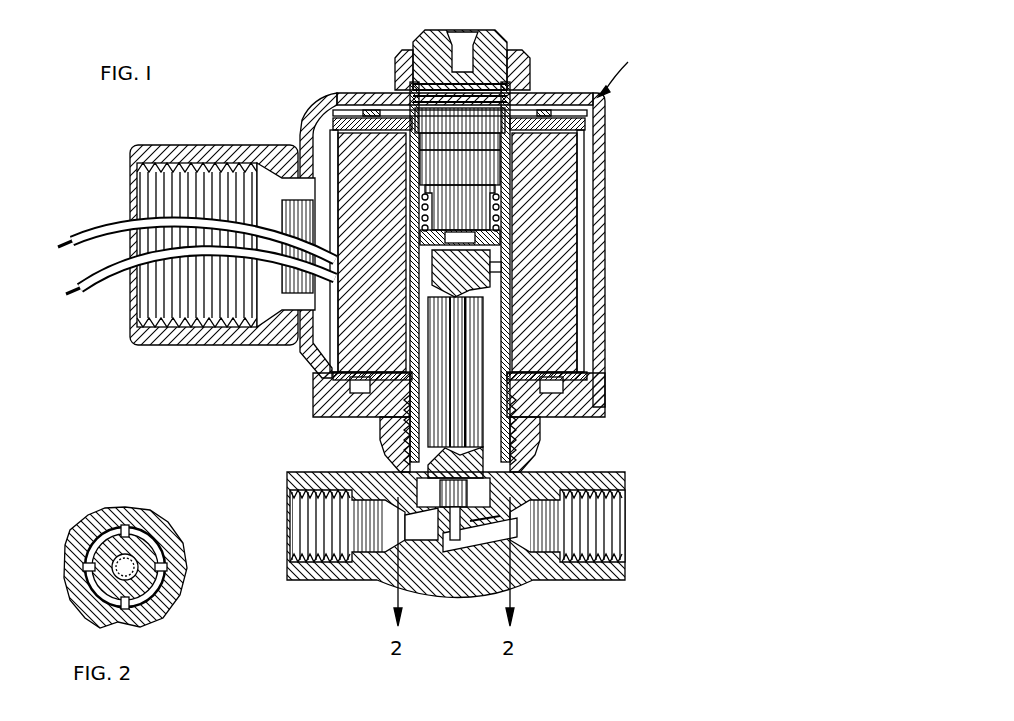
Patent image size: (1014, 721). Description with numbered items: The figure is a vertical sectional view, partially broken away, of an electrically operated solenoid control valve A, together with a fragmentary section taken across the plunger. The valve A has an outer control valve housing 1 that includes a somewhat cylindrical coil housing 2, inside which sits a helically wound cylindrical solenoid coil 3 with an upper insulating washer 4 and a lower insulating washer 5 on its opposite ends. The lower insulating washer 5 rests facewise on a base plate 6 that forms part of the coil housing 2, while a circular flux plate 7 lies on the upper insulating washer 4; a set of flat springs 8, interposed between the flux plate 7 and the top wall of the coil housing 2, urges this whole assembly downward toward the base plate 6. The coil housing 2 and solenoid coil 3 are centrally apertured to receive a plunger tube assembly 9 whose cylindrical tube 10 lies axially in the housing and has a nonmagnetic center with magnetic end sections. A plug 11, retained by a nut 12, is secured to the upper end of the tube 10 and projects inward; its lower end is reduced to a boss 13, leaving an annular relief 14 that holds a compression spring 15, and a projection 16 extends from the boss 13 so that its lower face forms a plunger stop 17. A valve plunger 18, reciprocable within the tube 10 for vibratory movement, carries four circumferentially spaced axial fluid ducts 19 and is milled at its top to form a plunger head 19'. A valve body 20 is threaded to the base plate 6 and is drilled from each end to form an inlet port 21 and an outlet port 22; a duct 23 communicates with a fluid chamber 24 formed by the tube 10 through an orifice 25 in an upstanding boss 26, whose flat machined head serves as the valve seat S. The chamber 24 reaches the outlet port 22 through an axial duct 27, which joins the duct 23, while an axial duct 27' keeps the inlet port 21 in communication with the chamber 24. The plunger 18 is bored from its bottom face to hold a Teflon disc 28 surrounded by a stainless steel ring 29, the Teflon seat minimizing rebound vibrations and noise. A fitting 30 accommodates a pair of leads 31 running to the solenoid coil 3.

In FIG. 1, the electrically operated solenoid control valve A is at (616, 72).
In FIG. 1, the outer control valve housing 1 is at (318, 100).
In FIG. 1, the coil housing 2 is at (600, 360).
In FIG. 1, the solenoid coil 3 is at (570, 165).
In FIG. 1, the upper insulating washer 4 is at (330, 140).
In FIG. 1, the lower insulating washer 5 is at (305, 360).
In FIG. 1, the base plate 6 is at (598, 412).
In FIG. 1, the flux plate 7 is at (330, 95).
In FIG. 1, the flat springs 8 is at (560, 94).
In FIG. 1, the plunger tube assembly 9 is at (426, 36).
In FIG. 1, the cylindrical tube 10 is at (505, 318).
In FIG. 1, the plug 11 is at (470, 36).
In FIG. 1, the nut 12 is at (520, 52).
In FIG. 1, the boss 13 is at (512, 213).
In FIG. 1, the annular relief 14 is at (510, 222).
In FIG. 1, the compression spring 15 is at (515, 200).
In FIG. 1, the projection 16 is at (505, 243).
In FIG. 1, the plunger stop 17 is at (497, 255).
In FIG. 2, the valve plunger 18 is at (126, 555).
In FIG. 2, the fluid ducts 19 is at (111, 565).
In FIG. 1, the plunger head 19' is at (579, 263).
In FIG. 1, the valve body 20 is at (585, 579).
In FIG. 2, the valve body 20 is at (78, 615).
In FIG. 1, the inlet port 21 is at (305, 527).
In FIG. 1, the outlet port 22 is at (605, 530).
In FIG. 1, the duct 23 is at (455, 548).
In FIG. 1, the fluid chamber 24 is at (412, 522).
In FIG. 1, the orifice 25 is at (397, 466).
In FIG. 1, the upstanding boss 26 is at (463, 545).
In FIG. 1, the axial duct 27 is at (543, 560).
In FIG. 1, the axial duct 27' is at (366, 560).
In FIG. 1, the disc 28 is at (532, 441).
In FIG. 2, the disc 28 is at (88, 528).
In FIG. 1, the stainless steel ring 29 is at (490, 460).
In FIG. 2, the stainless steel ring 29 is at (150, 602).
In FIG. 1, the fitting 30 is at (178, 145).
In FIG. 1, the leads 31 is at (98, 271).
In FIG. 1, the valve seat S is at (475, 530).